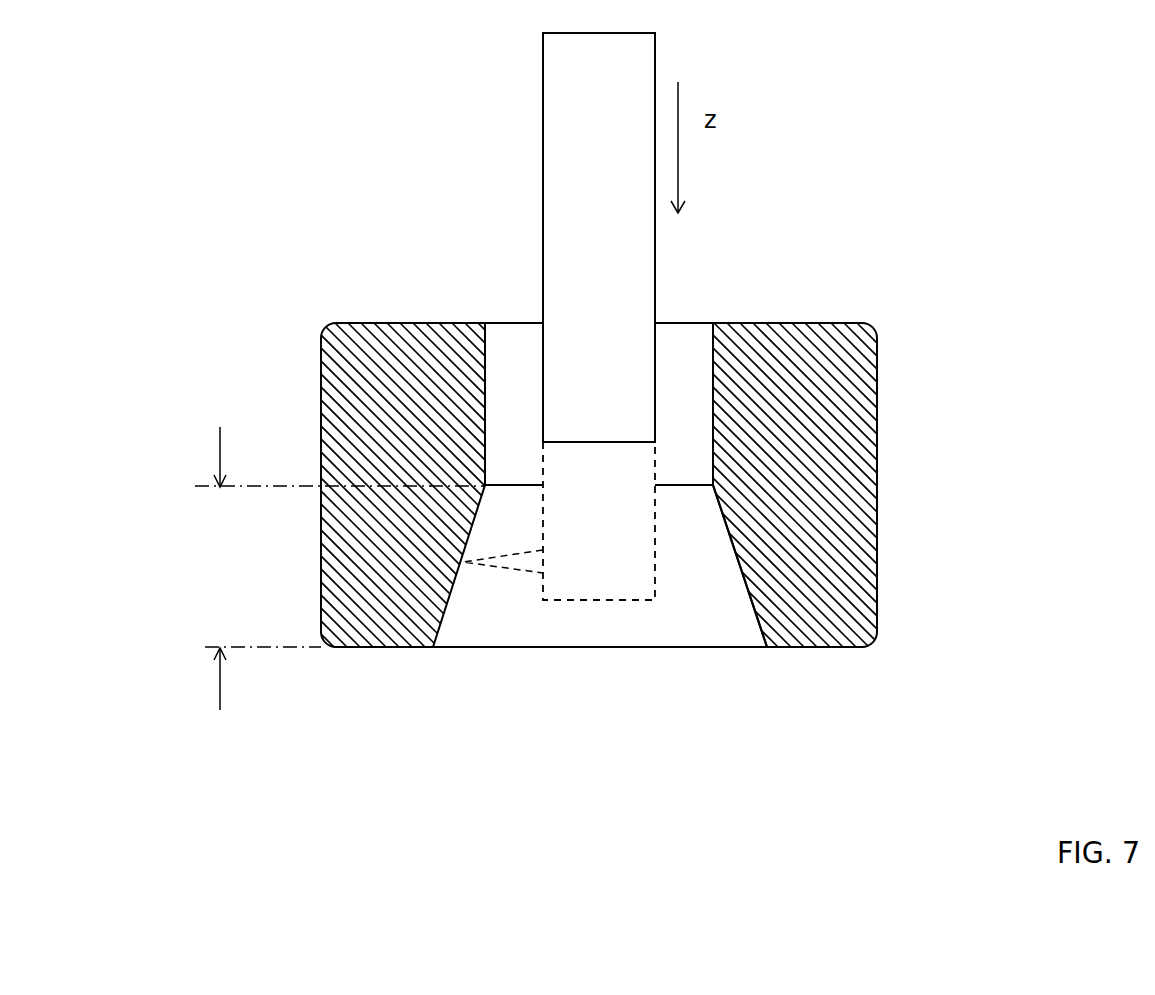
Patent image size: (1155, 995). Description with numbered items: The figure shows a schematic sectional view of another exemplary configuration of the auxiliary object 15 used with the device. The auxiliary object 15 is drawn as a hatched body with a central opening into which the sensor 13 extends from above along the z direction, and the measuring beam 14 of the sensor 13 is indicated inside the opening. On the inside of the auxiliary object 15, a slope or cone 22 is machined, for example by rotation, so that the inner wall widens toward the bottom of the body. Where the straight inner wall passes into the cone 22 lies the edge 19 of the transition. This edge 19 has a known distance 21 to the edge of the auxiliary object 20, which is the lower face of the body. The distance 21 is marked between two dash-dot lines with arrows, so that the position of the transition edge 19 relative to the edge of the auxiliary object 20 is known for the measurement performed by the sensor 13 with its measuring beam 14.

The sensor 13 is at (630, 232).
The measuring beam 14 is at (480, 685).
The auxiliary object 15 is at (827, 353).
The edge 19 is at (717, 488).
The edge of the auxiliary object 20 is at (838, 647).
The known distance 21 is at (340, 547).
The slope (cone) 22 is at (740, 563).